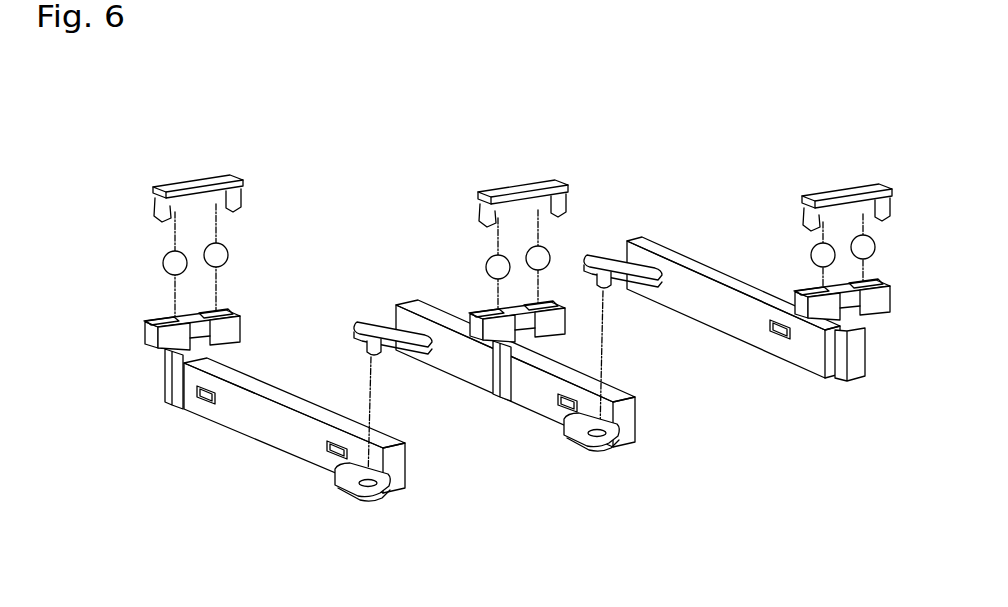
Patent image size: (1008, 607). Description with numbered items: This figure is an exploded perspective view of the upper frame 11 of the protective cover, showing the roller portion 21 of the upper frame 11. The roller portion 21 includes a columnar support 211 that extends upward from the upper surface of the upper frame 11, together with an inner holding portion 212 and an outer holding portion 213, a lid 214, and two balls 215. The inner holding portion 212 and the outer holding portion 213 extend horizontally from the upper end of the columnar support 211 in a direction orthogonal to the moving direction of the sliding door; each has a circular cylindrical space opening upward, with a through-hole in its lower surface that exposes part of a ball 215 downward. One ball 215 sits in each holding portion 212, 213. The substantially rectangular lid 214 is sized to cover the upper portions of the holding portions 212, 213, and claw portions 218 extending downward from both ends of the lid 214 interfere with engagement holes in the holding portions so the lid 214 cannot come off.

The upper frame 11 is at (517, 369).
The roller portion 21 is at (522, 136).
The columnar support 211 is at (544, 317).
The inner holding portion 212 is at (488, 309).
The outer holding portion 213 is at (558, 320).
The lid 214 is at (513, 192).
The ball 215 is at (487, 263).
The claw portion 218 is at (487, 221).